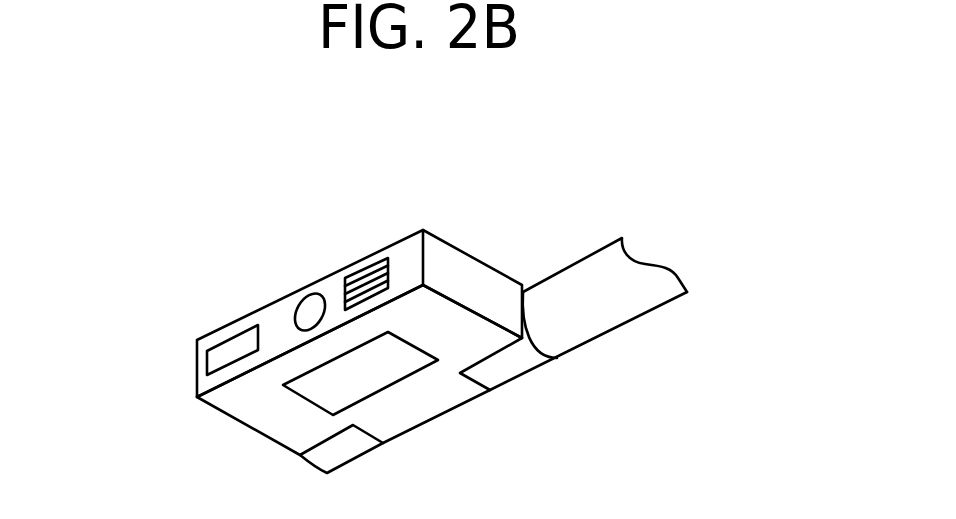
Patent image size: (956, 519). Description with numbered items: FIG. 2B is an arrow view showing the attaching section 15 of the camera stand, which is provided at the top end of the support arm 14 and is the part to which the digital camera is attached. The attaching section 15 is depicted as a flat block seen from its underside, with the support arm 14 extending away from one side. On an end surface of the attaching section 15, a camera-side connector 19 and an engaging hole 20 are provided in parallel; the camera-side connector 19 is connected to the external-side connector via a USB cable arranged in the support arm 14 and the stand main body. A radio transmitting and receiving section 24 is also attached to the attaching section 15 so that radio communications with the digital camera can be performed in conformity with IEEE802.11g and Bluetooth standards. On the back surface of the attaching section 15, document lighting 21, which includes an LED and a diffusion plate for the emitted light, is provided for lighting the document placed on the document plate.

The attaching section 15 is at (467, 250).
The camera-side connector 19 is at (357, 272).
The engaging hole 20 is at (312, 311).
The radio transmitting and receiving section 24 is at (218, 353).
The document lighting 21 is at (273, 413).
The support arm 14 is at (597, 327).